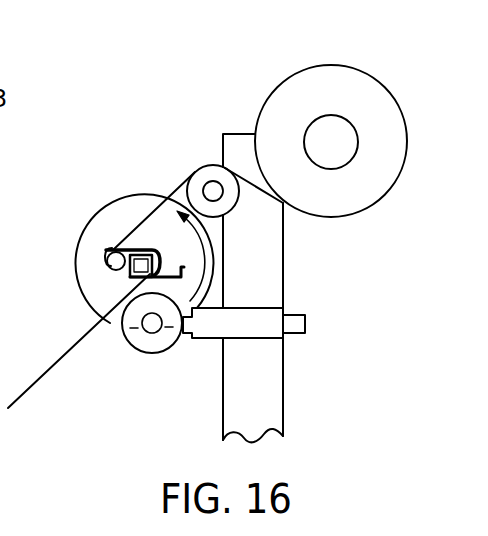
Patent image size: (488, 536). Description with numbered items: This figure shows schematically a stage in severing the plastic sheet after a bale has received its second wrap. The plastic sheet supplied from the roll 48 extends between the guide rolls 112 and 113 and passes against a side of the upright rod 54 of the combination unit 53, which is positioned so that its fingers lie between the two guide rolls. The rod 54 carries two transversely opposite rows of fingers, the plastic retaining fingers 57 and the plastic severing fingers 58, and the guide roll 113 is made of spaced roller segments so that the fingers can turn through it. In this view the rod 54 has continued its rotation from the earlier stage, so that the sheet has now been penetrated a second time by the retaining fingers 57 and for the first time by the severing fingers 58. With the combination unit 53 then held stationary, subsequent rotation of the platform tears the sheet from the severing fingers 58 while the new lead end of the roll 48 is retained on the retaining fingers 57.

The roll of plastic sheet material 48 is at (274, 116).
The guide roll 112 is at (197, 182).
The combination unit 53 is at (125, 218).
The plastic retaining fingers 57 is at (104, 257).
The upright rod 54 is at (133, 272).
The plastic severing fingers 58 is at (184, 270).
The guide roll 113 is at (147, 343).